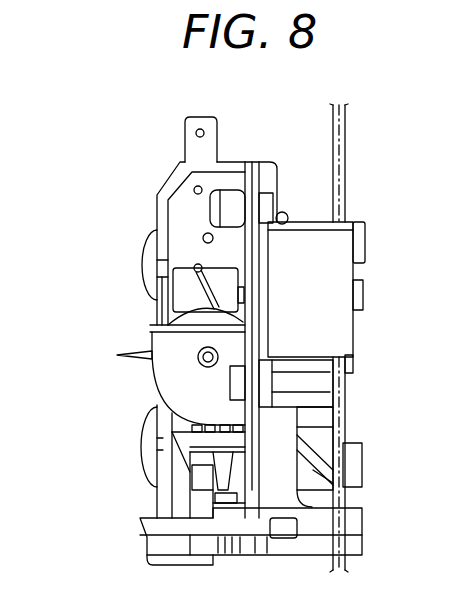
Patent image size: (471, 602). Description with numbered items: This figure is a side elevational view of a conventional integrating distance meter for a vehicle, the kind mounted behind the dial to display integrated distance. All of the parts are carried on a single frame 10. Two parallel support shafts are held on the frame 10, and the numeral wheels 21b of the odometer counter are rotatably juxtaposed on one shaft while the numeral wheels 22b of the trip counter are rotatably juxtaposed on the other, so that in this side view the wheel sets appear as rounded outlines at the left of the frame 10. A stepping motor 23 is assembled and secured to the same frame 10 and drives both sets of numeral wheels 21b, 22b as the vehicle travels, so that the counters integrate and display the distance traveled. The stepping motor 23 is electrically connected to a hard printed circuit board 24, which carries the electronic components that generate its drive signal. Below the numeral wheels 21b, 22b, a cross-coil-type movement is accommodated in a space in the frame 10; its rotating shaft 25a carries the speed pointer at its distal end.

The frame 10 is at (250, 226).
The numeral wheels 21b is at (148, 247).
The numeral wheels 22b is at (150, 437).
The stepping motor 23 is at (322, 265).
The hard printed circuit board 24 is at (340, 186).
The rotating shaft 25a is at (117, 353).